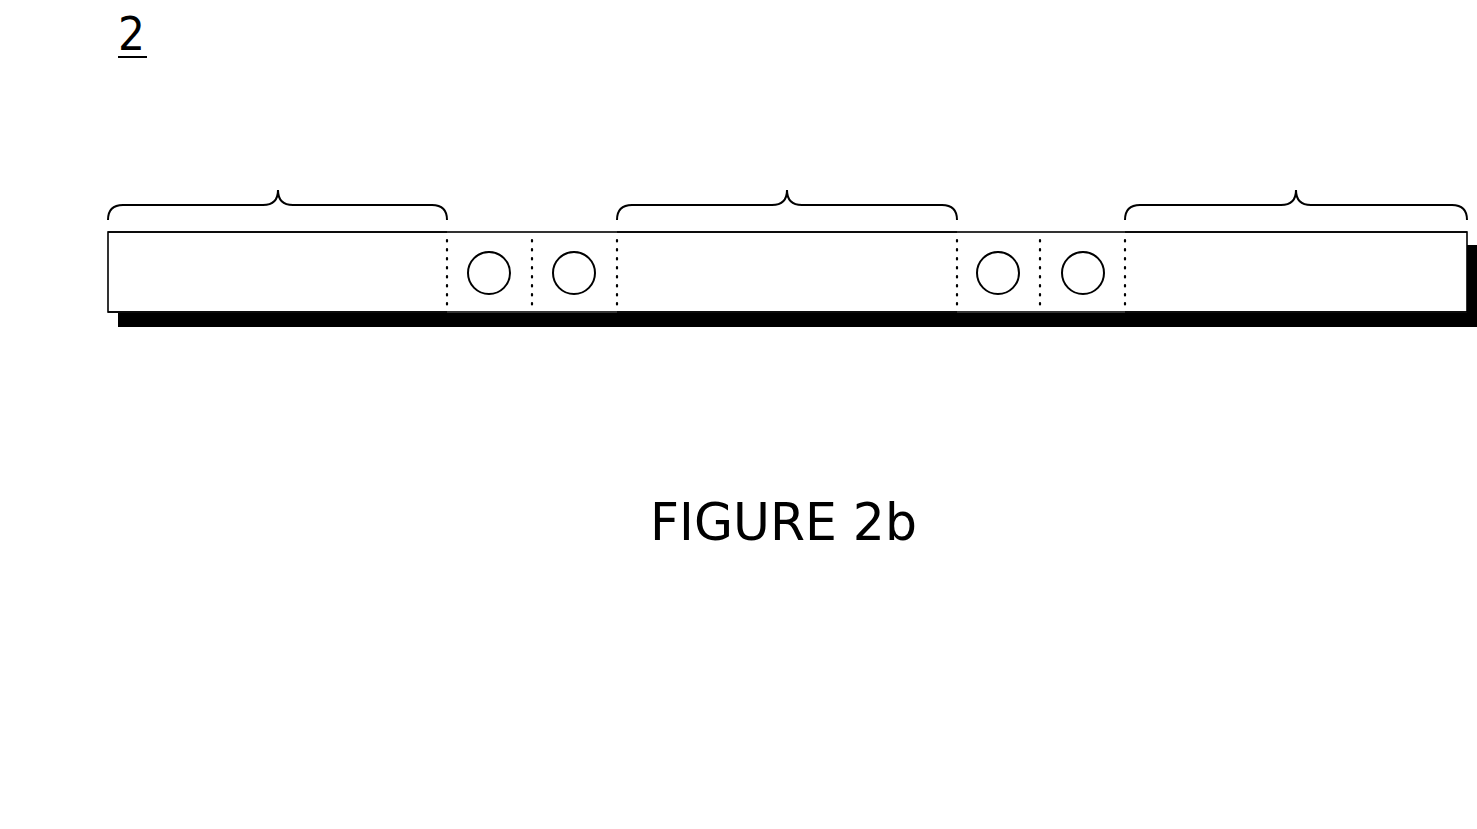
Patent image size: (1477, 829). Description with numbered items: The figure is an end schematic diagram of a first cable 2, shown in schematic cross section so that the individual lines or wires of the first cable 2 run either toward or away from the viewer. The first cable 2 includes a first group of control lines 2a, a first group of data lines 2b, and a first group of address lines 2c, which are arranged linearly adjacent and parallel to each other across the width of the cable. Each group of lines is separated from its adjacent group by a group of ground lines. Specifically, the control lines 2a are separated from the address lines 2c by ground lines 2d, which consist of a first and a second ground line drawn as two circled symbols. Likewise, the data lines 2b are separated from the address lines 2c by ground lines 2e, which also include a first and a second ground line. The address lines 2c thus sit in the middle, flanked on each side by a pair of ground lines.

The first cable 2 is at (792, 258).
The first group of control lines 2a is at (360, 325).
The first group of data lines 2b is at (1250, 327).
The first group of address lines 2c is at (782, 325).
The ground lines 2d is at (565, 258).
The ground lines 2e is at (1073, 258).